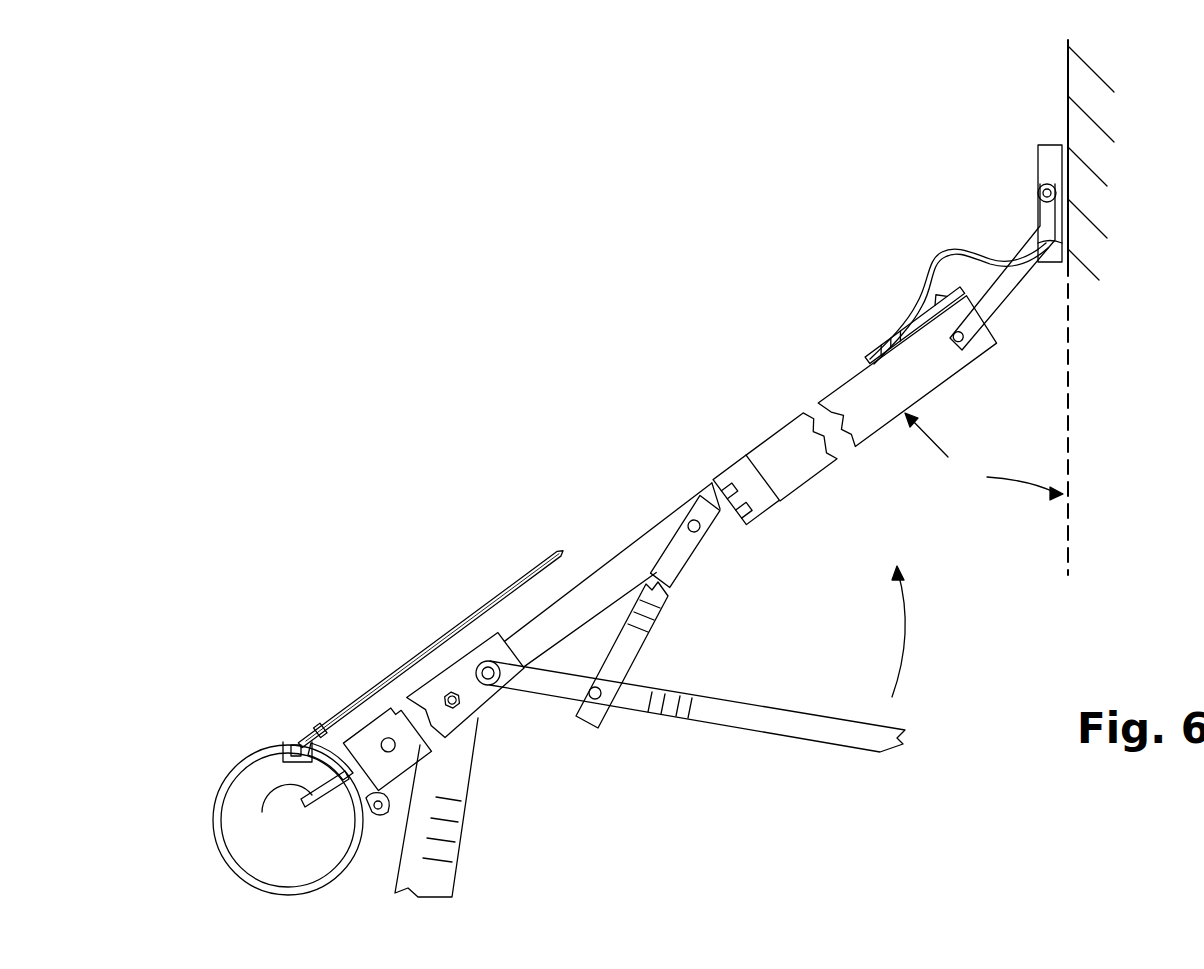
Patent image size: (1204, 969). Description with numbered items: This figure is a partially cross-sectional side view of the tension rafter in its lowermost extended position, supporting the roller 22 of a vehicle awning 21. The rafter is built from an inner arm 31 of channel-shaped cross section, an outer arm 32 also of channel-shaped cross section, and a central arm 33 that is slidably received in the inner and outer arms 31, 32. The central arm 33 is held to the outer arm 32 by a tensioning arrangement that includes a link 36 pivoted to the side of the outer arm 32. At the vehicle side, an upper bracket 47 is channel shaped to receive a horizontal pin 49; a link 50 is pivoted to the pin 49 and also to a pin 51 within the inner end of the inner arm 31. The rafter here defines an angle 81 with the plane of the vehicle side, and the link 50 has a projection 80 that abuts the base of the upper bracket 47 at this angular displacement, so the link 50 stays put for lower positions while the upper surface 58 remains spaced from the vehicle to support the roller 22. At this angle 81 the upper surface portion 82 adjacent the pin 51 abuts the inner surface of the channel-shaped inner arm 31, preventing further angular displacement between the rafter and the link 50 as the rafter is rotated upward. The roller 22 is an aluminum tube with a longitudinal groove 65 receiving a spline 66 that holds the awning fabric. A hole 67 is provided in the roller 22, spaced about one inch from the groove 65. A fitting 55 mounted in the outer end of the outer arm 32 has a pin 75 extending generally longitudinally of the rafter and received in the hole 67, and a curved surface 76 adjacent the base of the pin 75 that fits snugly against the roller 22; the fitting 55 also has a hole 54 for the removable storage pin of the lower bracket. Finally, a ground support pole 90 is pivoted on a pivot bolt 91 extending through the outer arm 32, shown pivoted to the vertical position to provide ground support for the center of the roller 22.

The awning 21 is at (478, 610).
The roller 22 is at (217, 800).
The inner arm 31 is at (858, 400).
The outer arm 32 is at (505, 688).
The central arm 33 is at (723, 528).
The link 36 is at (758, 713).
The upper bracket 47 is at (1050, 150).
The pin 49 is at (1040, 190).
The link 50 is at (1005, 283).
The pin 51 is at (958, 345).
The hole 54 is at (390, 812).
The fitting 55 is at (323, 733).
The upper surface 58 is at (1030, 236).
The longitudinal groove 65 is at (280, 742).
The spline 66 is at (297, 742).
The hole 67 is at (345, 776).
The pin 75 is at (274, 812).
The curved surface 76 is at (382, 735).
The projection 80 is at (1050, 264).
The angle 81 is at (977, 555).
The upper surface portion 82 is at (950, 298).
The ground support pole 90 is at (457, 773).
The pivot bolt 91 is at (440, 695).